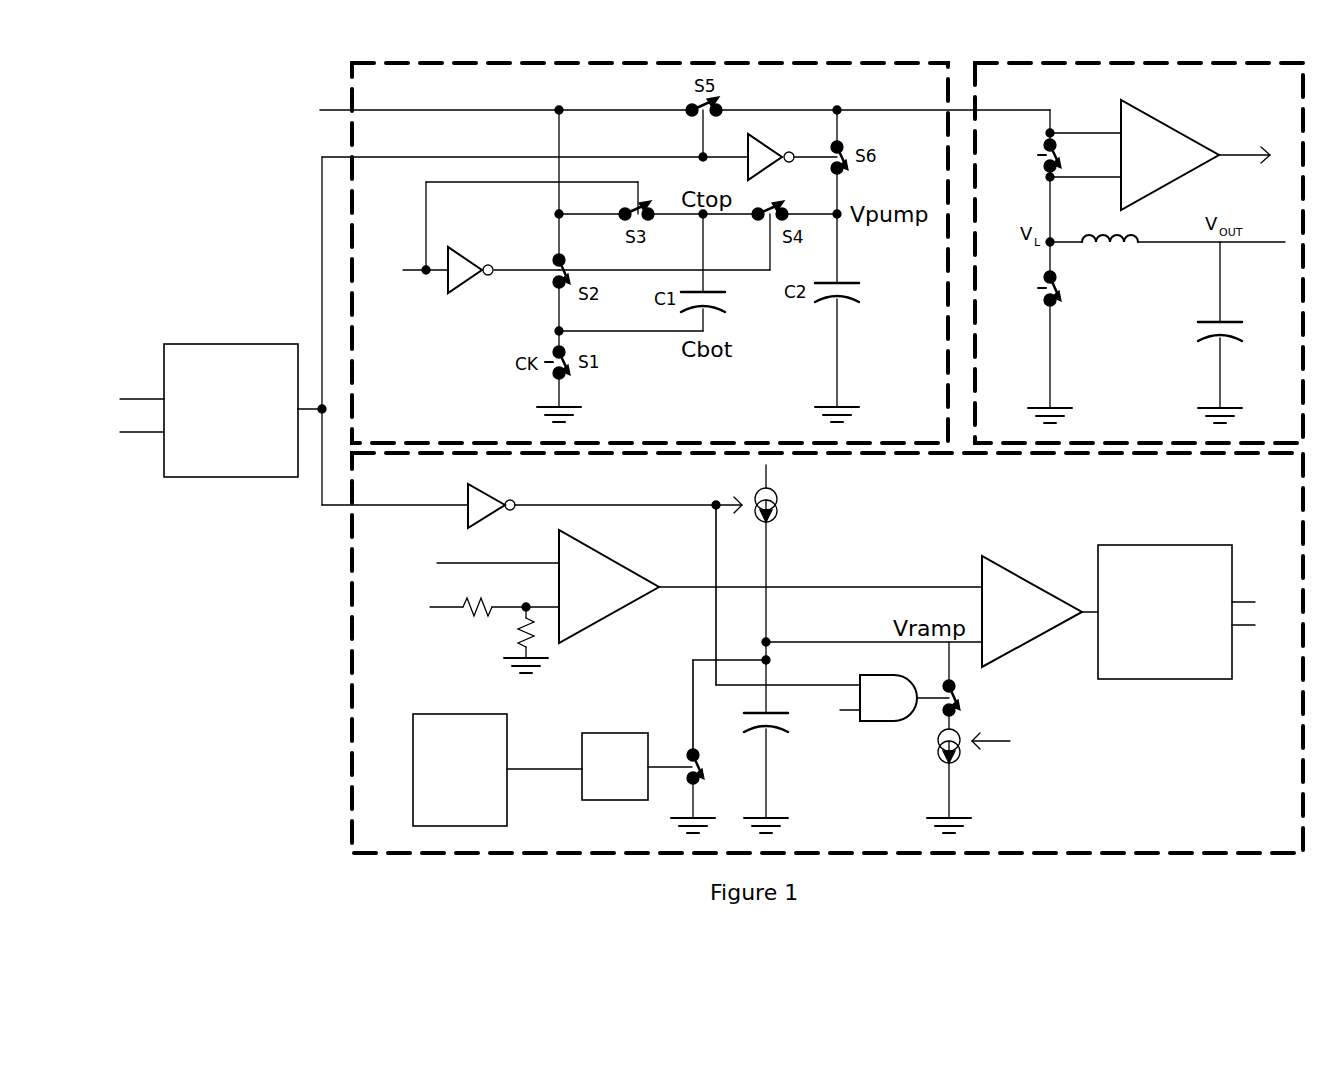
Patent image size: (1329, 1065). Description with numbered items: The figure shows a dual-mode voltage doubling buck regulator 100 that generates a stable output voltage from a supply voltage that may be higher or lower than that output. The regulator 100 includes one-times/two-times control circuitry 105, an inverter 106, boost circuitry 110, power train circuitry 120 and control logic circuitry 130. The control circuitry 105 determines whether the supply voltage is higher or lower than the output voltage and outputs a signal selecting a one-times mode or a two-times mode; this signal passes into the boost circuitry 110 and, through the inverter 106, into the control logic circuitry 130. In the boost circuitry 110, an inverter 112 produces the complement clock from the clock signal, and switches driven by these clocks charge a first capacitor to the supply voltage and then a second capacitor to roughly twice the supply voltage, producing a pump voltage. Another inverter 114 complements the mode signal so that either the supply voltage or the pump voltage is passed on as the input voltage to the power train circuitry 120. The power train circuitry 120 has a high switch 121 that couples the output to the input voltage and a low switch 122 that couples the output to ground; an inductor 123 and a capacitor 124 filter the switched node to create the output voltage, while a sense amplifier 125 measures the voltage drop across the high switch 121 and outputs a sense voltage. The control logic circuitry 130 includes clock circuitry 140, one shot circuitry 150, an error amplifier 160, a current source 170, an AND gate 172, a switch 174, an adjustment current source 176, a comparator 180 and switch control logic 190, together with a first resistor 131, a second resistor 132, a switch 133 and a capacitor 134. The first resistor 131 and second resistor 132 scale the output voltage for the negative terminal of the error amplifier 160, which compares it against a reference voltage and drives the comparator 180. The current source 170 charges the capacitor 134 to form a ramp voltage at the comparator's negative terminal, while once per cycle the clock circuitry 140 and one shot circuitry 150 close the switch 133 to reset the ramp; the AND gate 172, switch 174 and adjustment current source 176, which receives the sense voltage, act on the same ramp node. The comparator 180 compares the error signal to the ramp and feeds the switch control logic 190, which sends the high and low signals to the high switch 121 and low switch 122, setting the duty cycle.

The dual-mode voltage doubling buck regulator 100 is at (228, 43).
The 1X/2X control circuitry 105 is at (223, 399).
The inverter 106 is at (532, 502).
The boost circuitry 110 is at (650, 241).
The inverter 112 is at (467, 259).
The inverter 114 is at (792, 151).
The power train circuitry 120 is at (1139, 240).
The high switch 121 is at (1059, 155).
The low switch 122 is at (1059, 288).
The inductor 123 is at (1167, 253).
The capacitor 124 is at (1196, 332).
The sense amplifier 125 is at (1172, 155).
The control logic circuitry 130 is at (827, 653).
The first resistor 131 is at (494, 620).
The second resistor 132 is at (515, 640).
The switch 133 is at (698, 791).
The capacitor 134 is at (748, 766).
The clock circuitry 140 is at (497, 758).
The one shot circuitry 150 is at (615, 754).
The error amplifier 160 is at (695, 586).
The current source 170 is at (789, 589).
The AND gate 172 is at (880, 688).
The switch 174 is at (972, 698).
The adjustment current source 176 is at (1001, 771).
The comparator 180 is at (1040, 610).
The switch control logic 190 is at (1192, 600).